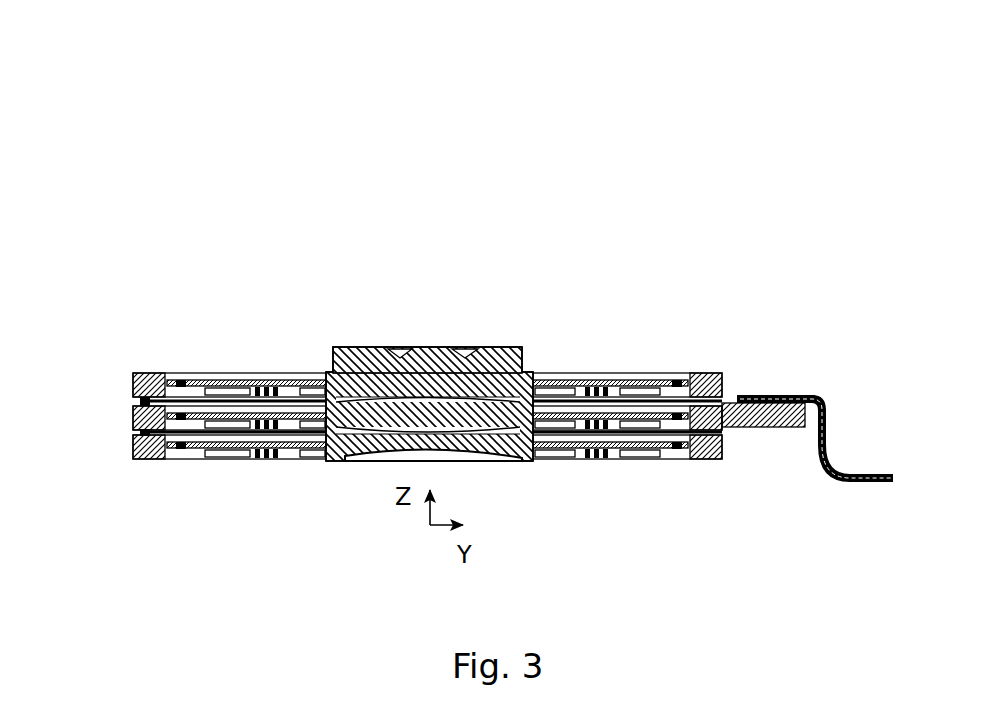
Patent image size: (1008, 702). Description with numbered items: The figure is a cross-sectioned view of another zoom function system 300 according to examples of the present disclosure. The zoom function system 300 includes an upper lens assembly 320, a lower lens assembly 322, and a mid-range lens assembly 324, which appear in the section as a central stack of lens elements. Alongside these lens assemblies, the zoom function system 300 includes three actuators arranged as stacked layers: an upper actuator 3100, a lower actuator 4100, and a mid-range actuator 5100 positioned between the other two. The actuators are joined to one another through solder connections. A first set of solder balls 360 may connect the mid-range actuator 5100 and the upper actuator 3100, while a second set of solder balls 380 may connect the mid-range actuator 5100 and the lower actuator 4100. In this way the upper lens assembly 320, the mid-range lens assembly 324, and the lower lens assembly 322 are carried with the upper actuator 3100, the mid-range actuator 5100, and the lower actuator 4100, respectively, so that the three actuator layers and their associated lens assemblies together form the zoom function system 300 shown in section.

The zoom function system 300 is at (198, 98).
The upper lens assembly 320 is at (372, 376).
The lower lens assembly 322 is at (365, 452).
The mid-range lens assembly 324 is at (345, 400).
The first set of solder balls 360 is at (130, 399).
The second set of solder balls 380 is at (130, 433).
The upper actuator 3100 is at (630, 370).
The lower actuator 4100 is at (651, 463).
The mid-range actuator 5100 is at (662, 430).